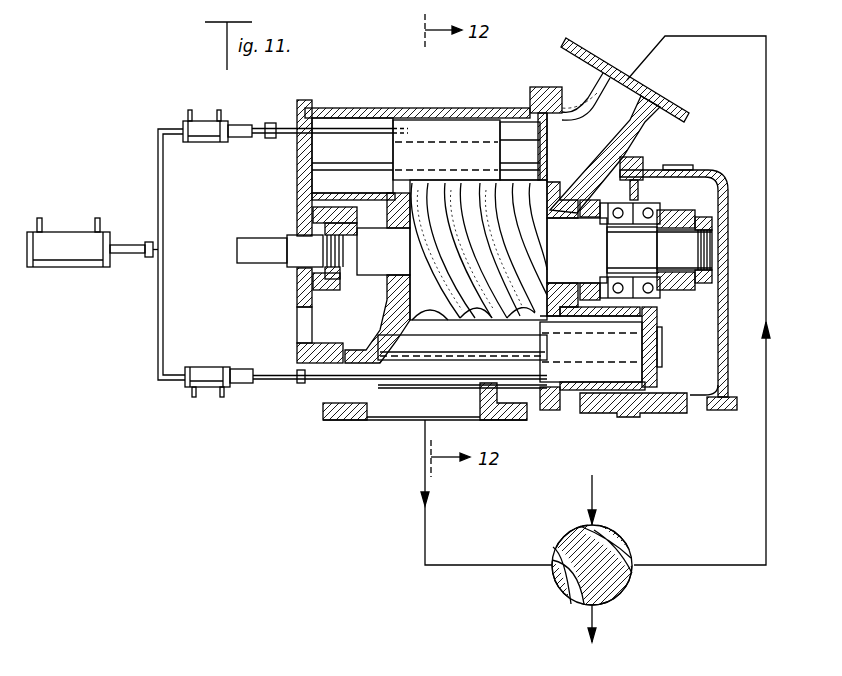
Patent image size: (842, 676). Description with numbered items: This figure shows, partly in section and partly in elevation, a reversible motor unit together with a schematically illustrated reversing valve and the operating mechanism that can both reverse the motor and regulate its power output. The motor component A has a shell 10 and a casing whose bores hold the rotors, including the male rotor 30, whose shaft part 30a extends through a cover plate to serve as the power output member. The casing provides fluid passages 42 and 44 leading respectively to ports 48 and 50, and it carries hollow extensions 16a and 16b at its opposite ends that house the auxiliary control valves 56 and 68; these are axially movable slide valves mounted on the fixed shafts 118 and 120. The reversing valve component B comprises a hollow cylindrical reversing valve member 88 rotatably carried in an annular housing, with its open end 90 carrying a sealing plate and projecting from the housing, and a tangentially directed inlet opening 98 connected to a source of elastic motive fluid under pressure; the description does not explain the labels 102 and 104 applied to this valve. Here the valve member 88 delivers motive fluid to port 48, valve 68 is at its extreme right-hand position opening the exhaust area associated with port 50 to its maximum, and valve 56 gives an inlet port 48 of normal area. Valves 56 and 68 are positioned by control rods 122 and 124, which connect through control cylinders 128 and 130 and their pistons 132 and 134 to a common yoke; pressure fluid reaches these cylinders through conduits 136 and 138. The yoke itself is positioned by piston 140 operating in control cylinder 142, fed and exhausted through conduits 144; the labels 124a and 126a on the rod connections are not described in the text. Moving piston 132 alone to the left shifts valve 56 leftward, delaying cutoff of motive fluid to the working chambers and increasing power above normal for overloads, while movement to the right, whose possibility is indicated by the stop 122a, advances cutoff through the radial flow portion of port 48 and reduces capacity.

The shell 10 is at (421, 109).
The hollow casing extension 16a is at (330, 108).
The hollow casing extension 16b is at (655, 308).
The male rotor 30 is at (510, 260).
The male rotor shaft part 30a is at (262, 258).
The fluid passage 42 is at (613, 83).
The fluid passage 44 is at (397, 410).
The port 48 is at (550, 193).
The port 50 is at (405, 312).
The auxiliary control valve 56 is at (450, 168).
The auxiliary control valve 68 is at (595, 356).
The reversing valve member 88 is at (632, 580).
The open end 90 is at (598, 631).
The inlet opening 98 is at (592, 508).
The valve passage 102 is at (628, 552).
The valve passage 104 is at (577, 581).
The fixed shaft 118 is at (320, 157).
The fixed shaft 120 is at (477, 352).
The control rod 122 is at (350, 130).
The stop 122a is at (277, 112).
The control rod 124 is at (418, 379).
The rod fitting 124a is at (300, 384).
The piston rod fitting 126a is at (148, 242).
The control cylinder 128 is at (206, 142).
The control cylinder 130 is at (220, 352).
The piston 132 is at (241, 124).
The piston 134 is at (253, 384).
The conduit 136 is at (220, 110).
The conduit 138 is at (225, 420).
The piston 140 is at (133, 254).
The control cylinder 142 is at (65, 258).
The conduits 144 is at (97, 218).
The motor component A is at (472, 104).
The reversing valve component B is at (632, 532).